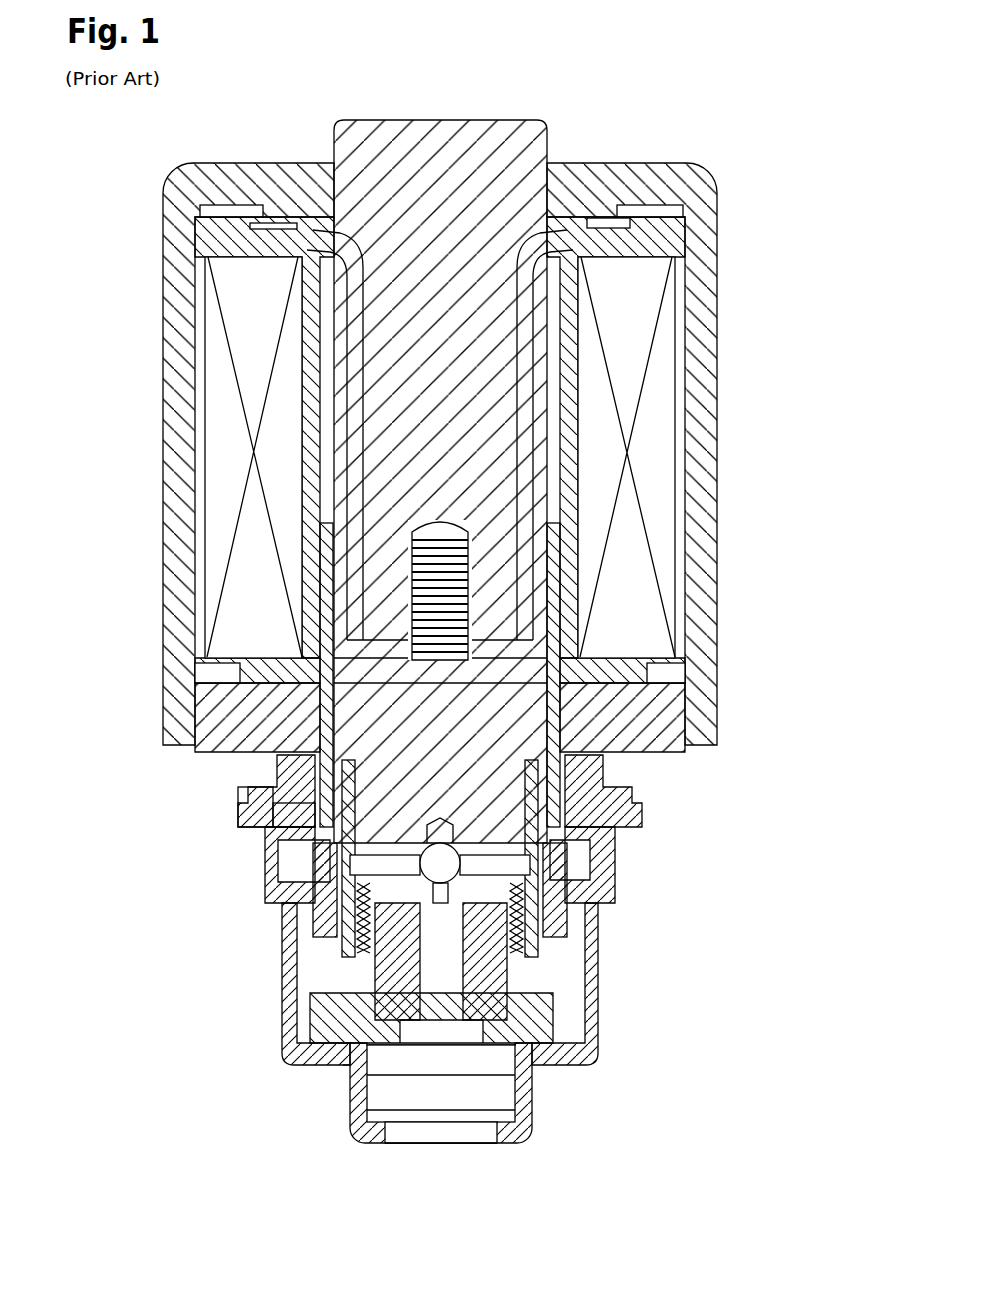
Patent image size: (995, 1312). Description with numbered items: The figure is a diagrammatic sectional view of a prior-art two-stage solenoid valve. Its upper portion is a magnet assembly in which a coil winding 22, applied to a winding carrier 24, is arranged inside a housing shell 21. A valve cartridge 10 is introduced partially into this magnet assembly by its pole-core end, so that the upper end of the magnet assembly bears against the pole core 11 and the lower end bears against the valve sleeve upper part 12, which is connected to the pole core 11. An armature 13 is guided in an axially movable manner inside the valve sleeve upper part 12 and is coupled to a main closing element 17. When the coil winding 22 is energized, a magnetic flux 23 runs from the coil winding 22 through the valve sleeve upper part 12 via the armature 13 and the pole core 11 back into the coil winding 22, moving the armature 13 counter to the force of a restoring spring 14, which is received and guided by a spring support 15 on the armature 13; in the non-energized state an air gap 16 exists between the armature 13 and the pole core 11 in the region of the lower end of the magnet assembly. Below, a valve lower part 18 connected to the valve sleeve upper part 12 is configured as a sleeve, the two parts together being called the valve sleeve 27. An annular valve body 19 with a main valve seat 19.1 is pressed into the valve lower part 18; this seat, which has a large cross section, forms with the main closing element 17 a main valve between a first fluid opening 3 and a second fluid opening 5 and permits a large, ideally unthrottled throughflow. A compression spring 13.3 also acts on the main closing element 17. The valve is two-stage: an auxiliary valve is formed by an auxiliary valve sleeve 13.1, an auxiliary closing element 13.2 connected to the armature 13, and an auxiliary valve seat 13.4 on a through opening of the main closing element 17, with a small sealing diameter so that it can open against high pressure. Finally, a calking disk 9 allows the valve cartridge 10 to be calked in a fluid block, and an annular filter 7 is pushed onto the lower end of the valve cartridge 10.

The first fluid opening 3 is at (440, 1132).
The second fluid opening 5 is at (320, 967).
The annular filter 7 is at (545, 952).
The calking disk 9 is at (253, 790).
The valve cartridge 10 is at (440, 441).
The pole core 11 is at (437, 150).
The valve sleeve upper part 12 is at (640, 815).
The armature 13 is at (232, 793).
The auxiliary valve sleeve 13.1 is at (310, 816).
The auxiliary closing element 13.2 is at (285, 851).
The compression spring 13.3 is at (528, 918).
The auxiliary valve seat 13.4 is at (605, 868).
The restoring spring 14 is at (465, 583).
The spring support 15 is at (420, 682).
The air gap 16 is at (338, 648).
The main closing element 17 is at (465, 978).
The valve lower part 18 is at (449, 1093).
The valve body 19 is at (480, 1003).
The main valve seat 19.1 is at (345, 1070).
The housing shell 21 is at (190, 313).
The coil winding 22 is at (228, 427).
The magnetic flux 23 is at (535, 650).
The winding carrier 24 is at (571, 490).
The valve sleeve 27 is at (603, 845).